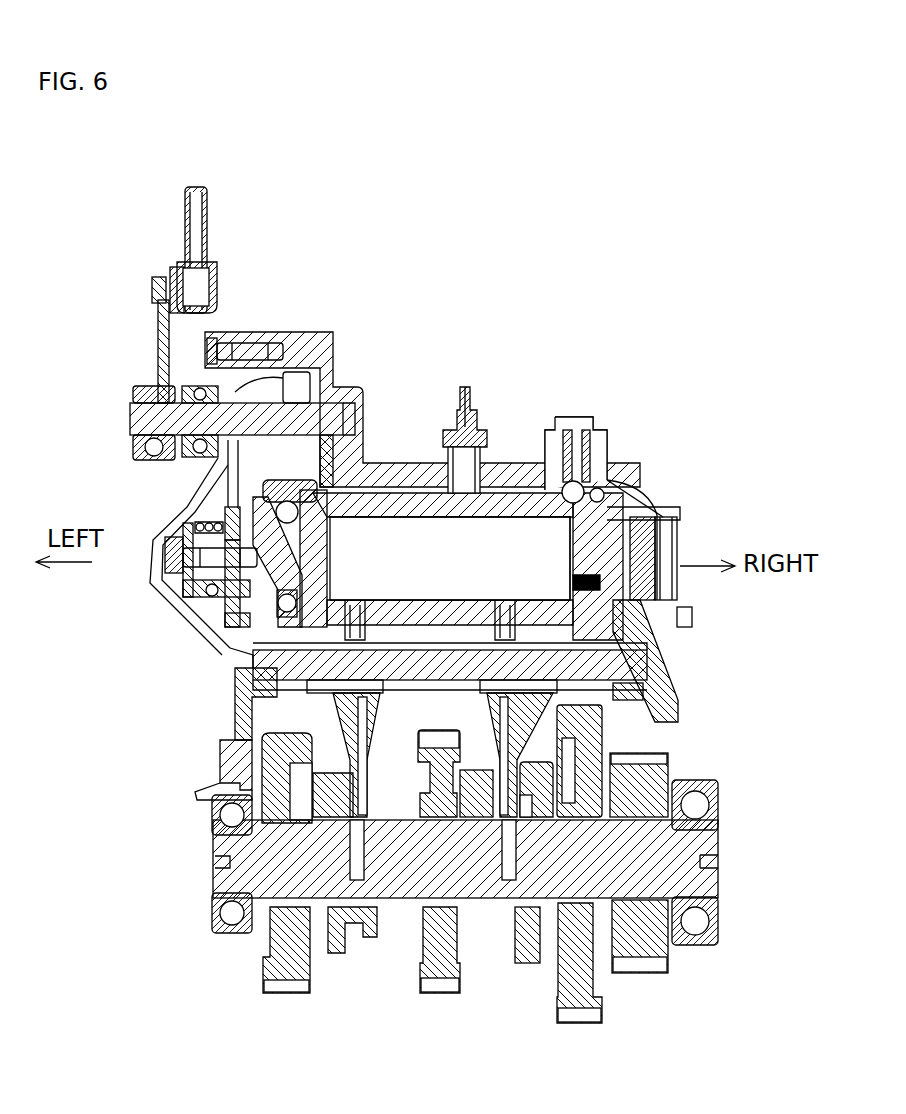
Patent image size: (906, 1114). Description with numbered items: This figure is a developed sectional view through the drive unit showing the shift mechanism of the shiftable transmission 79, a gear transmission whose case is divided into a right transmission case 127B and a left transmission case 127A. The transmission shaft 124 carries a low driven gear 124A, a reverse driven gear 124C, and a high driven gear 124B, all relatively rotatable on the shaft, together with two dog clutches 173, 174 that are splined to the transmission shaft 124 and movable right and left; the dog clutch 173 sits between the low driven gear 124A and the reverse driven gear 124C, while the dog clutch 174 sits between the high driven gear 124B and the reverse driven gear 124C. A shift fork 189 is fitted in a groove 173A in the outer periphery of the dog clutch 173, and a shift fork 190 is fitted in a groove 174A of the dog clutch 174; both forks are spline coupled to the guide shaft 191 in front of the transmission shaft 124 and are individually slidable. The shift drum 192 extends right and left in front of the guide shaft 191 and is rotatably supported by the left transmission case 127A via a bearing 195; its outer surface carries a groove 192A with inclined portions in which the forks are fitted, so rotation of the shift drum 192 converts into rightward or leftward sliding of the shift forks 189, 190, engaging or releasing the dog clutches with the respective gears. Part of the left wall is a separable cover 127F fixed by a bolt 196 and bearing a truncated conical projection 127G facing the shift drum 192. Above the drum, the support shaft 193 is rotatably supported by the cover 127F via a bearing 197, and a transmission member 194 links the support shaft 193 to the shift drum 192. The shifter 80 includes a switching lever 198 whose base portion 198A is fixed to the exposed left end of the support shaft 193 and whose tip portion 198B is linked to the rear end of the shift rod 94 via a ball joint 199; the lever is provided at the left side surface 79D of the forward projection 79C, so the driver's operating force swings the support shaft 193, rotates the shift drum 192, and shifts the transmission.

The shifter 80 is at (214, 150).
The switching lever 198 is at (158, 340).
The shift rod 94 is at (197, 200).
The ball joint 199 is at (203, 284).
The tip portion 198B is at (158, 290).
The left side surface 79D is at (208, 328).
The bolt 196 is at (248, 338).
The projection 79C is at (317, 333).
The bearing 197 is at (265, 392).
The support shaft 193 is at (350, 425).
The base portion 198A is at (133, 448).
The cover 127F is at (200, 468).
The transmission member 194 is at (197, 503).
The projection 127G is at (158, 590).
The bearing 195 is at (222, 620).
The shiftable transmission 79 is at (228, 660).
The left transmission case 127A is at (235, 735).
The groove 174A is at (240, 788).
The shift drum 192 is at (648, 540).
The groove 192A is at (455, 512).
The right transmission case 127B is at (650, 456).
The guide shaft 191 is at (630, 658).
The shift fork 190 is at (348, 737).
The shift fork 189 is at (530, 752).
The transmission shaft 124 is at (700, 860).
The high driven gear 124B is at (287, 994).
The dog clutch 174 is at (350, 955).
The reverse driven gear 124C is at (437, 994).
The dog clutch 173 is at (528, 965).
The low driven gear 124A is at (580, 1025).
The groove 173A is at (600, 790).